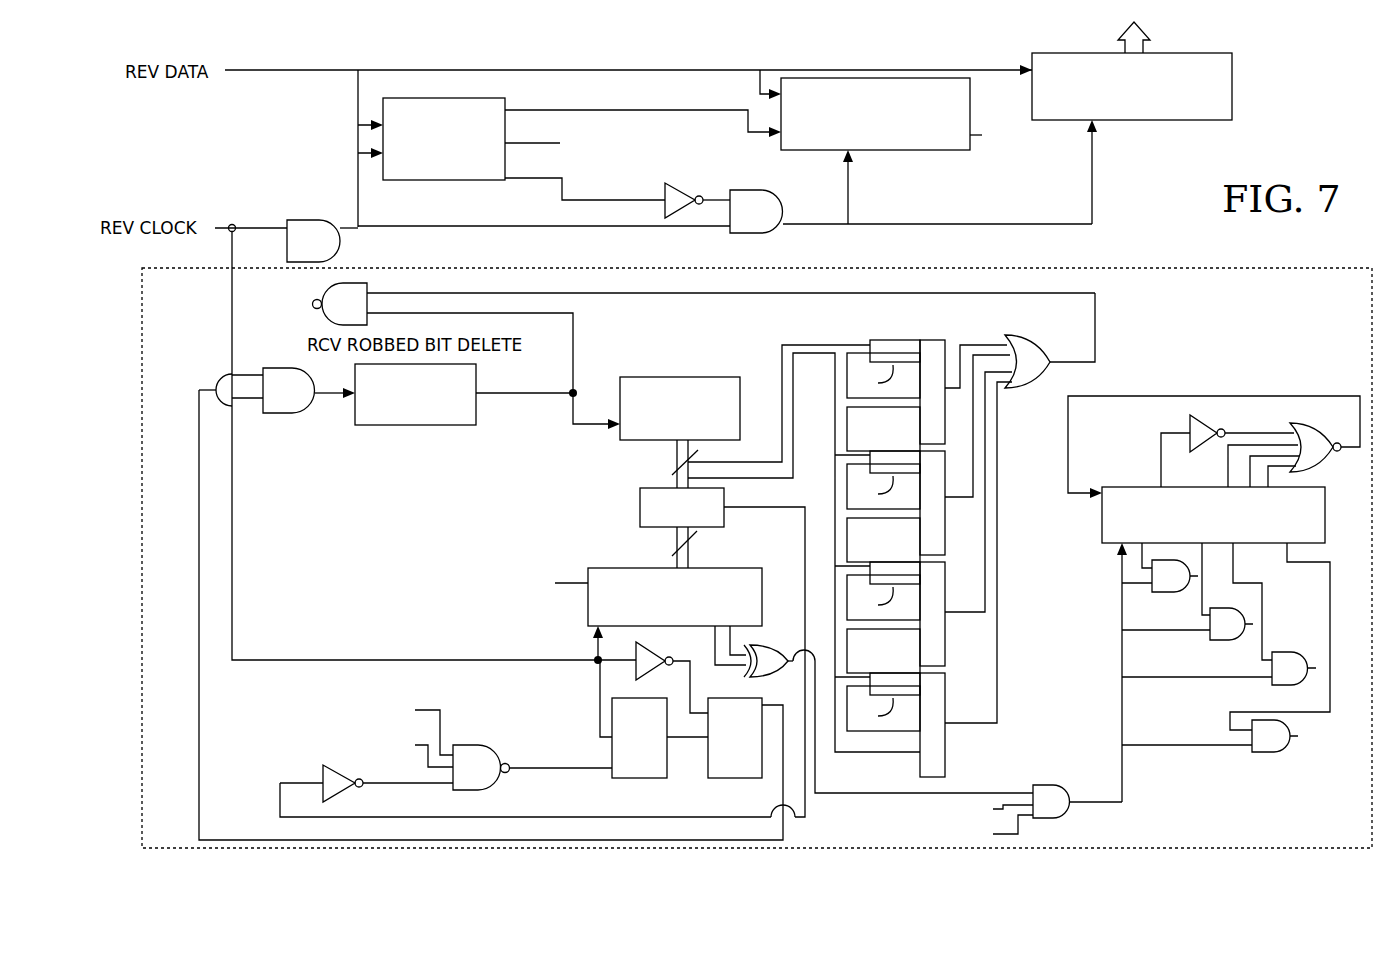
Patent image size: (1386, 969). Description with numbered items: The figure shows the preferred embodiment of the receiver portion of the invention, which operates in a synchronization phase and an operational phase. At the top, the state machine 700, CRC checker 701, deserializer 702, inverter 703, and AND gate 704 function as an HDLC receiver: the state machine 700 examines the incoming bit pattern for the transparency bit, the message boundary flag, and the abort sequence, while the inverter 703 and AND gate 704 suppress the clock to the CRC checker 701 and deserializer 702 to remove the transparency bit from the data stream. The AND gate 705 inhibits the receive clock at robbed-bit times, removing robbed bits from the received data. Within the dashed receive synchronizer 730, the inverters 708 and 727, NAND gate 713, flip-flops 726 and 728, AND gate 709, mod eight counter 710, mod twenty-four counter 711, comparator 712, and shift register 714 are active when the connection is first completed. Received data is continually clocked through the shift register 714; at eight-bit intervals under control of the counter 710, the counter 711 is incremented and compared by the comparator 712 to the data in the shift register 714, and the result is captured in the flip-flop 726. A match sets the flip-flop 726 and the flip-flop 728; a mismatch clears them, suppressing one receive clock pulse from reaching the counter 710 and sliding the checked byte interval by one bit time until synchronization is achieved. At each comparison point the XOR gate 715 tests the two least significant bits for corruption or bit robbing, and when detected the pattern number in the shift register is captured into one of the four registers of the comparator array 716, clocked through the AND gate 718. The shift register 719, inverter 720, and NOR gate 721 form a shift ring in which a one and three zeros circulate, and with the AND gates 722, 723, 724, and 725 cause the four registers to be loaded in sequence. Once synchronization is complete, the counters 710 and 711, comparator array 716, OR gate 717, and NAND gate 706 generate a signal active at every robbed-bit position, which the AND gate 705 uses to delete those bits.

The state machine 700 is at (580, 138).
The CRC checker 701 is at (896, 151).
The deserializer 702 is at (1127, 123).
The inverter 703 is at (697, 219).
The AND gate 704 is at (725, 225).
The AND gate 705 is at (322, 228).
The NAND gate 706 is at (704, 351).
The inverter 708 is at (537, 789).
The AND gate 709 is at (277, 407).
The mod 8 counter 710 is at (464, 410).
The mod 24 counter 711 is at (680, 422).
The comparator 712 is at (716, 641).
The NAND gate 713 is at (447, 745).
The shift register 714 is at (607, 596).
The XOR gate 715 is at (888, 708).
The comparator array 716 is at (850, 545).
The OR gate 717 is at (1050, 345).
The AND gate 718 is at (991, 814).
The shift register 719 is at (1214, 599).
The inverter 720 is at (1221, 449).
The NOR gate 721 is at (1291, 449).
The AND gate 722 is at (1160, 580).
The AND gate 723 is at (1187, 604).
The AND gate 724 is at (1219, 627).
The AND gate 725 is at (1226, 662).
The flip-flop 726 is at (633, 735).
The inverter 727 is at (672, 674).
The flip-flop 728 is at (491, 615).
The receive synchronizer 730 is at (757, 558).